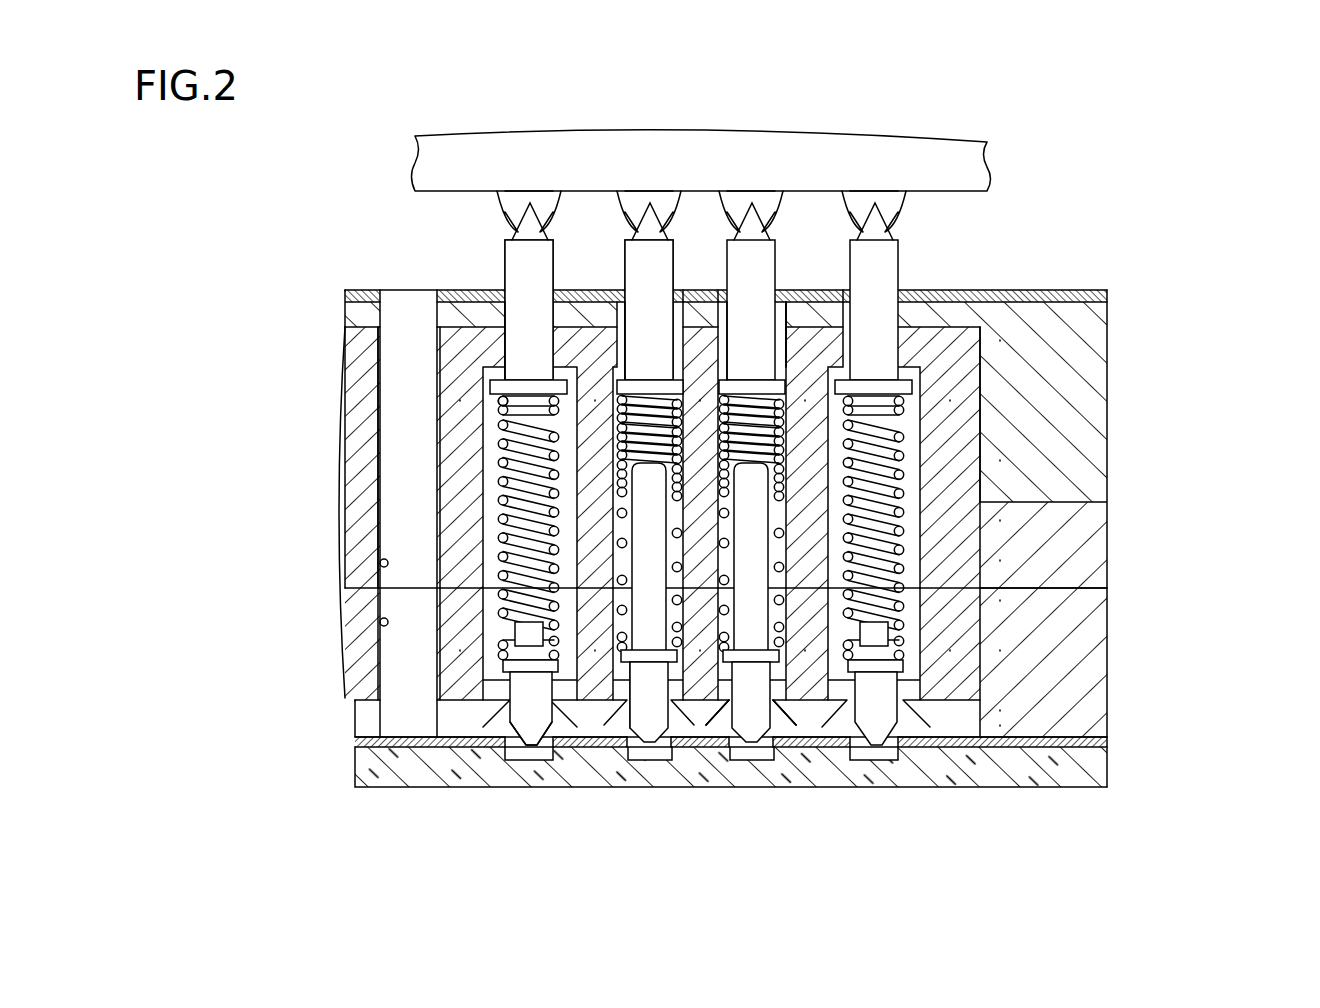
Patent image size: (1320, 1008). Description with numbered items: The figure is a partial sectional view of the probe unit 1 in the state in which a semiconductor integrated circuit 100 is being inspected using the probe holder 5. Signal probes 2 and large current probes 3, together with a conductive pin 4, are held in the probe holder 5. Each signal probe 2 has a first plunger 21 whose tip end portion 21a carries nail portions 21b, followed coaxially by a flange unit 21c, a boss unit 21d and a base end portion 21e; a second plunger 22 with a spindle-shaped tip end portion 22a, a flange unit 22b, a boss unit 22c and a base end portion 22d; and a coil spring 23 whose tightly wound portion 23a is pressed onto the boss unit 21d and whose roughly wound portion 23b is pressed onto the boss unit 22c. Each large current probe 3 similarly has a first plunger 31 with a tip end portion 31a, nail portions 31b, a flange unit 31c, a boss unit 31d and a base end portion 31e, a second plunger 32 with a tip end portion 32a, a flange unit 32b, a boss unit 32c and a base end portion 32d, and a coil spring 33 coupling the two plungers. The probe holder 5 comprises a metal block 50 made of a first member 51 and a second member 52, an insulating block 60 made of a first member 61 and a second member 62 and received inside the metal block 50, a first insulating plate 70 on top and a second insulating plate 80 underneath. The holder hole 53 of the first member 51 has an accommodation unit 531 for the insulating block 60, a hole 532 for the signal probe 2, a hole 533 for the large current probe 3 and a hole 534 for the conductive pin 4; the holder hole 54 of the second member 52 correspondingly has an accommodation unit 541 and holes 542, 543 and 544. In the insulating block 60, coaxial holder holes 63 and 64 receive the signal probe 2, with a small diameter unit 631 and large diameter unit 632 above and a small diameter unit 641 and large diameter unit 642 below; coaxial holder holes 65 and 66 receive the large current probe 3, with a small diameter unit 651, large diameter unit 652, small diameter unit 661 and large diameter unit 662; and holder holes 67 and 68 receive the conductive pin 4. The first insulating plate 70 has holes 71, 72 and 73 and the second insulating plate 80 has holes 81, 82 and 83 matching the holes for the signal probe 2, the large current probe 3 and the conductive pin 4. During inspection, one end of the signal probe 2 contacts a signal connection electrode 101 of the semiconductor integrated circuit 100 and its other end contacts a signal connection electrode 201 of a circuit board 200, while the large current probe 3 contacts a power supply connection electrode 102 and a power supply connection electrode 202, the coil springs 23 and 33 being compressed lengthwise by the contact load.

The probe unit 1 is at (1150, 158).
The signal probe 2 is at (657, 488).
The large current probe 3 is at (583, 501).
The conductive pin 4 is at (405, 313).
The probe holder 5 is at (1239, 290).
The first plunger 21 is at (645, 278).
The tip end portion 21a is at (625, 268).
The nail portion 21b is at (628, 207).
The flange unit 21c is at (714, 292).
The boss unit 21d is at (618, 365).
The base end portion 21e is at (653, 380).
The second plunger 22 is at (649, 656).
The tip end portion 22a is at (630, 660).
The flange unit 22b is at (647, 658).
The boss unit 22c is at (665, 712).
The base end portion 22d is at (633, 532).
The coil spring 23 is at (606, 629).
The tightly wound portion 23a is at (619, 440).
The roughly wound portion 23b is at (620, 560).
The first plunger 31 is at (404, 283).
The tip end portion 31a is at (505, 277).
The nail portion 31b is at (508, 207).
The flange unit 31c is at (525, 378).
The boss unit 31d is at (497, 383).
The base end portion 31e is at (508, 410).
The second plunger 32 is at (410, 736).
The tip end portion 32a is at (516, 737).
The flange unit 32b is at (512, 745).
The boss unit 32c is at (506, 664).
The base end portion 32d is at (518, 633).
The coil spring 33 is at (399, 528).
The metal block 50 is at (1183, 482).
The first member 51 is at (1100, 495).
The second member 52 is at (1100, 540).
The holder hole 53 is at (425, 88).
The holder hole 54 is at (990, 872).
The insulating block 60 is at (1183, 568).
The first member 61 is at (972, 577).
The second member 62 is at (970, 622).
The holder hole 63 is at (850, 168).
The holder hole 64 is at (770, 817).
The holder hole 65 is at (1183, 343).
The holder hole 66 is at (1183, 663).
The holder hole 67 is at (497, 592).
The holder hole 68 is at (500, 652).
The first insulating plate 70 is at (1107, 295).
The hole 71 is at (790, 300).
The hole 72 is at (855, 292).
The hole 73 is at (383, 290).
The second insulating plate 80 is at (1107, 742).
The hole 81 is at (795, 748).
The hole 82 is at (852, 748).
The hole 83 is at (362, 787).
The semiconductor integrated circuit 100 is at (940, 160).
The signal connection electrode 101 is at (737, 203).
The power supply connection electrode 102 is at (861, 203).
The circuit board 200 is at (1107, 770).
The signal connection electrode 201 is at (780, 760).
The power supply connection electrode 202 is at (868, 760).
The accommodation unit 531 is at (950, 345).
The hole 532 is at (705, 345).
The hole 533 is at (815, 345).
The hole 534 is at (418, 305).
The accommodation unit 541 is at (958, 705).
The hole 542 is at (785, 705).
The hole 543 is at (870, 705).
The hole 544 is at (437, 712).
The small diameter unit 631 is at (797, 330).
The large diameter unit 632 is at (786, 330).
The small diameter unit 641 is at (770, 735).
The large diameter unit 642 is at (727, 732).
The small diameter unit 651 is at (930, 350).
The large diameter unit 652 is at (922, 407).
The small diameter unit 661 is at (915, 672).
The large diameter unit 662 is at (915, 648).